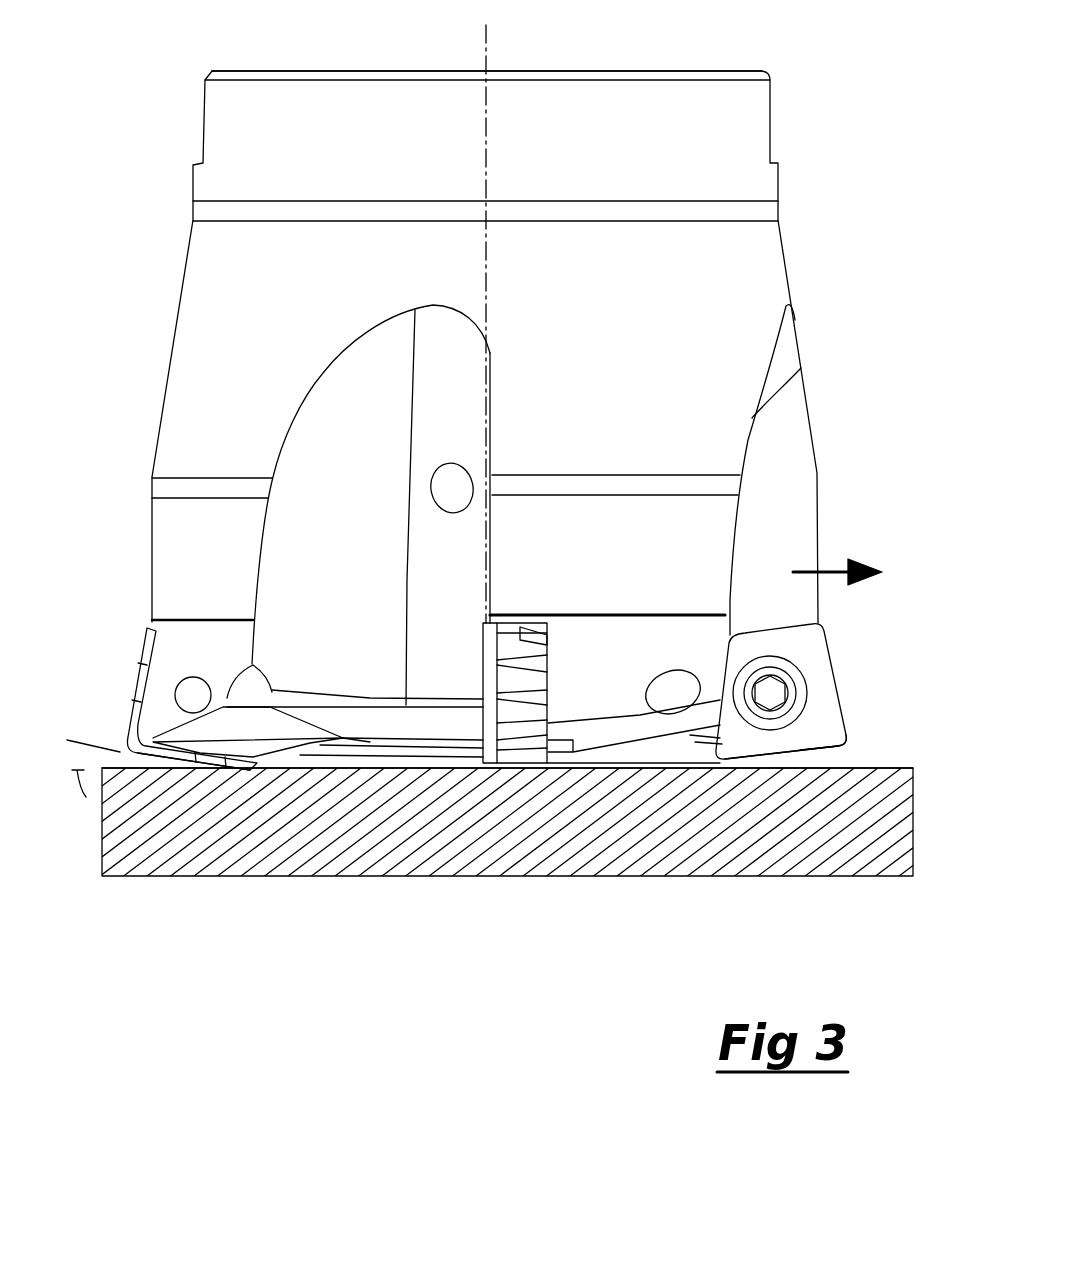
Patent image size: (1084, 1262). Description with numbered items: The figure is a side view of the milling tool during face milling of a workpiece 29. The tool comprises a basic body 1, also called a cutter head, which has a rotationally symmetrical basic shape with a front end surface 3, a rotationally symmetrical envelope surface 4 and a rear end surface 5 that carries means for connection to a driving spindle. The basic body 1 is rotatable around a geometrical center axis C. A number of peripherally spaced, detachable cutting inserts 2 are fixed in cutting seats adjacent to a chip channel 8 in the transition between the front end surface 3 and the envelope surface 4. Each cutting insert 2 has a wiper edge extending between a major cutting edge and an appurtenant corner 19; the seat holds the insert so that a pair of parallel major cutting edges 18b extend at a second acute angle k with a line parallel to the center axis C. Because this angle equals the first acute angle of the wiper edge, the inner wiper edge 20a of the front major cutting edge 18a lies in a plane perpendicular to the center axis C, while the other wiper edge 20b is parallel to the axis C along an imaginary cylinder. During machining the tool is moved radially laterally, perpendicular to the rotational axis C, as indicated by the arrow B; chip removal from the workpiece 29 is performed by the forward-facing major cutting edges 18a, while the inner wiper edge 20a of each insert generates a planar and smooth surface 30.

The basic body 1 is at (794, 250).
The cutting insert 2 is at (140, 643).
The front end surface 3 is at (367, 768).
The envelope surface 4 is at (439, 505).
The rear end surface 5 is at (608, 71).
The chip channel 8 is at (793, 424).
The front major cutting edge 18a is at (180, 768).
The major cutting edge 18b is at (836, 668).
The corner 19 is at (693, 768).
The inner wiper edge 20a is at (235, 768).
The wiper edge 20b is at (848, 731).
The workpiece 29 is at (520, 853).
The planar and smooth surface 30 is at (608, 768).
The arrow B is at (832, 572).
The center axis C is at (488, 146).
The second acute angle κ" k is at (98, 723).